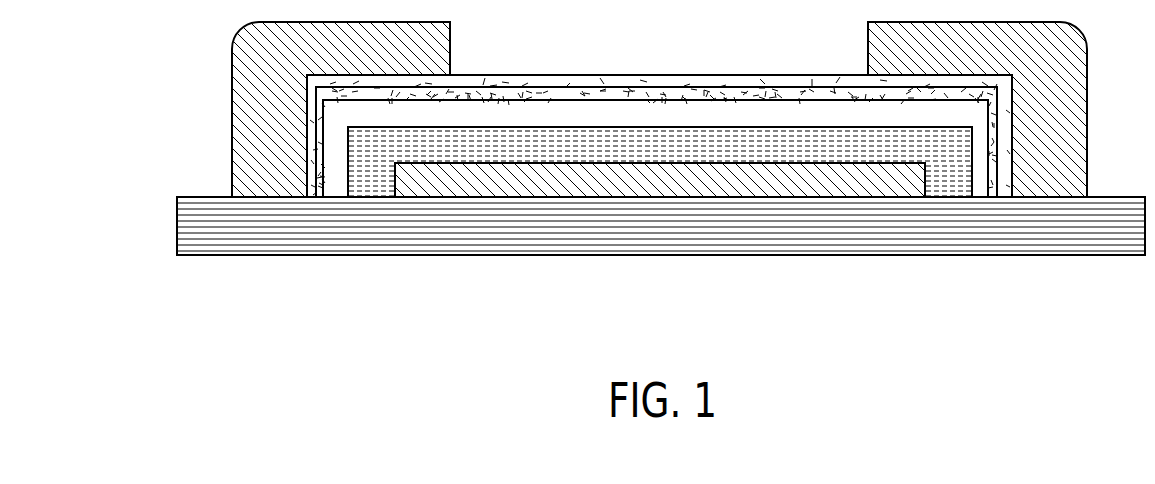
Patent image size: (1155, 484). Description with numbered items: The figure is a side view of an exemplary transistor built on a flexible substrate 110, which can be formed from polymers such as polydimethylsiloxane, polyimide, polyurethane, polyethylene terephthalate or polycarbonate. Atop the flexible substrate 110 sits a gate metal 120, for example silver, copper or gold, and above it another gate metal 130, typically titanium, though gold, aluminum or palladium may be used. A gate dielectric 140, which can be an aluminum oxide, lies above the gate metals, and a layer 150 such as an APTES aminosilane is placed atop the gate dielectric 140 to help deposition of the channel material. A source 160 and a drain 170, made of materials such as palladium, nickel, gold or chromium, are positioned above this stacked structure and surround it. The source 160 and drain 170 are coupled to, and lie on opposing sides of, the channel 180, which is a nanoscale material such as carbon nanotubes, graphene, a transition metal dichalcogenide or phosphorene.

The flexible substrate 110 is at (793, 245).
The gate metal 120 is at (708, 190).
The gate metal 130 is at (628, 152).
The gate dielectric 140 is at (527, 117).
The layer 150 is at (432, 95).
The source 160 is at (250, 73).
The drain 170 is at (1080, 112).
The channel 180 is at (792, 78).